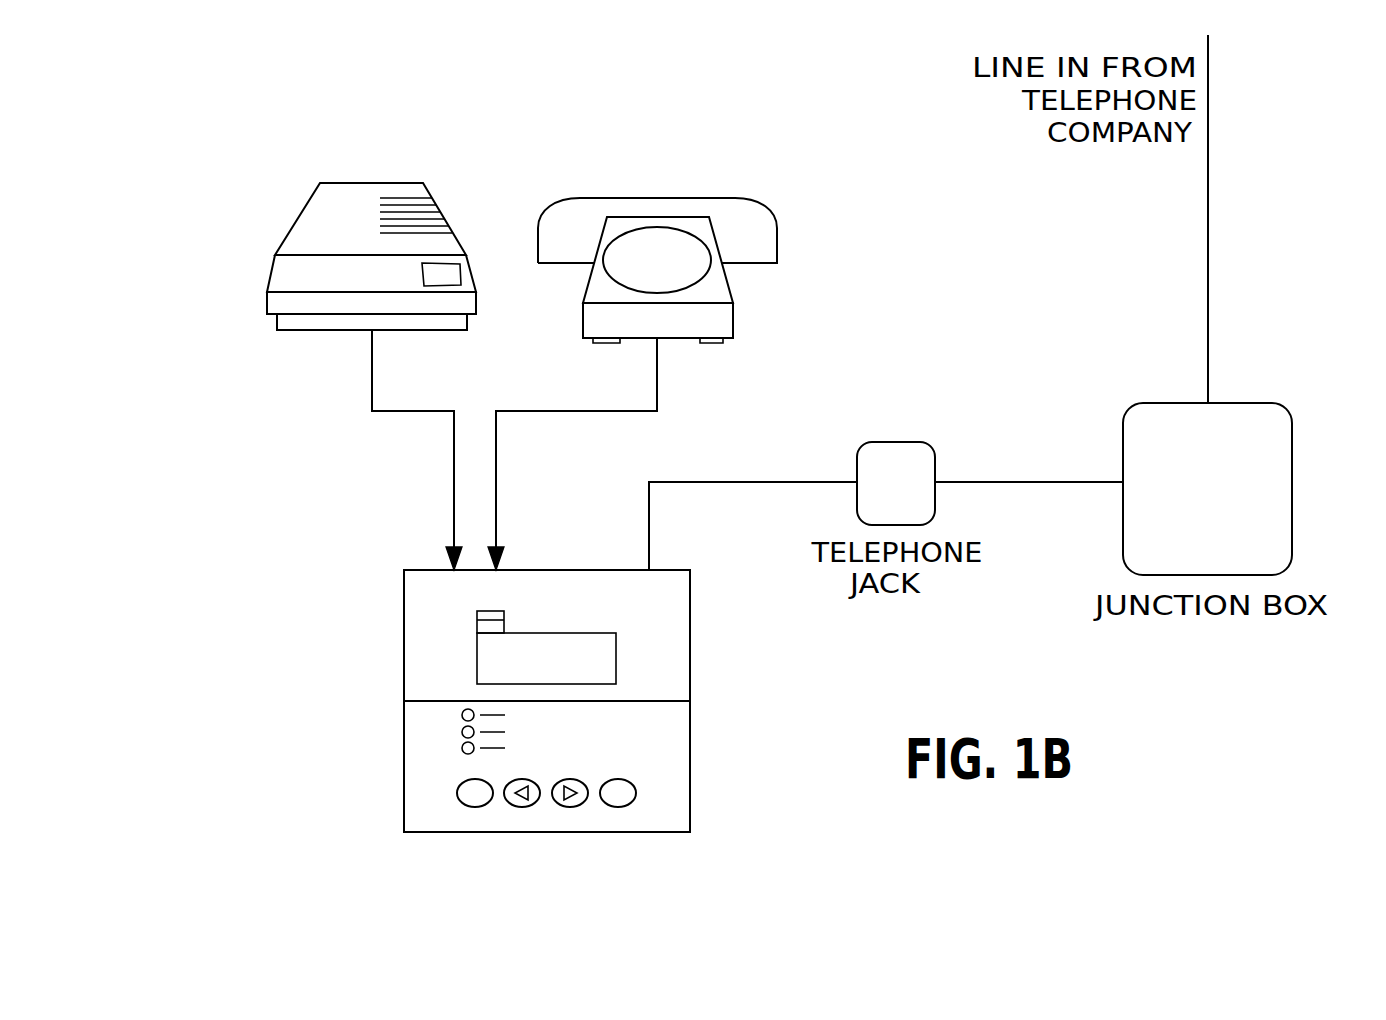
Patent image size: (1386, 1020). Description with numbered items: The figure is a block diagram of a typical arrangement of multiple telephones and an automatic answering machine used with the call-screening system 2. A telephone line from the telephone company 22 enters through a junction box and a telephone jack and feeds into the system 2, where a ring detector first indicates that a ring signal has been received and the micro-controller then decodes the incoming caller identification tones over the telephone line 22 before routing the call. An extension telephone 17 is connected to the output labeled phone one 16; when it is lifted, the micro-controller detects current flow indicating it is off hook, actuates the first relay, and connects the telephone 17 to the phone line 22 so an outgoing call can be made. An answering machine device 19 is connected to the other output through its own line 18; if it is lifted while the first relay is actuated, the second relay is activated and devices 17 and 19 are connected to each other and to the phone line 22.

The device 19 is at (316, 234).
The telephone 17 is at (725, 285).
The answering machine line 18 is at (452, 521).
The output phone 1 16 is at (497, 533).
The system 2 is at (677, 644).
The telephone line from the telephone company 22 is at (995, 482).